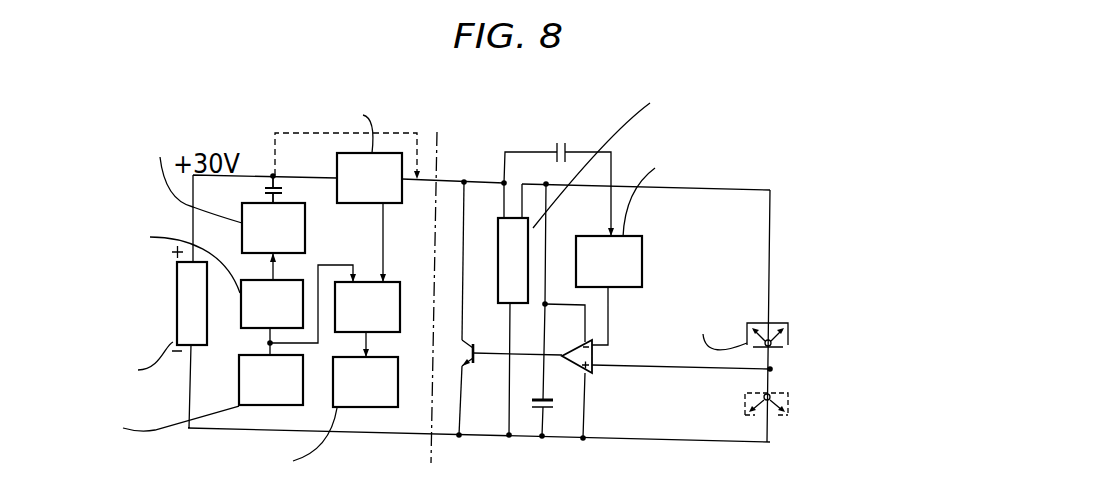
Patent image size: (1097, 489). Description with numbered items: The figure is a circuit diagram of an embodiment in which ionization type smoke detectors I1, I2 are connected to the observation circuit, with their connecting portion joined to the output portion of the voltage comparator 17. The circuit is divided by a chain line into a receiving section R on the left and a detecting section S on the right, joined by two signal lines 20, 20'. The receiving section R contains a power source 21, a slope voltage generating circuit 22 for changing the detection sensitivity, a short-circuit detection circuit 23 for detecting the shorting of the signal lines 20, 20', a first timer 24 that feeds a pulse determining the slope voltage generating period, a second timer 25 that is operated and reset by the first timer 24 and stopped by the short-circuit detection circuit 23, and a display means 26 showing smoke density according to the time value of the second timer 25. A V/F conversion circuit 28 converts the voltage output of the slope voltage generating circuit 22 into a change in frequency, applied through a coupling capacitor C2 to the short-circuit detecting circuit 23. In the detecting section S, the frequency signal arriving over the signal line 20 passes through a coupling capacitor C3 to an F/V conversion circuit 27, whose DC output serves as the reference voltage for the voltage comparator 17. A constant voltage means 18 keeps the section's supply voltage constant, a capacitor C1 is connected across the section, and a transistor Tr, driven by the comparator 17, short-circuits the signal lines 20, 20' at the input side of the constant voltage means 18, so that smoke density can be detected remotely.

The voltage comparator 17 is at (580, 343).
The constant voltage means 18 is at (498, 235).
The signal line 20 is at (470, 241).
The signal line 20' is at (463, 423).
The power source 21 is at (170, 281).
The slope voltage generating circuit 22 is at (241, 292).
The short-circuit detection circuit 23 is at (337, 160).
The first timer 24 is at (239, 394).
The second timer 25 is at (390, 282).
The display means 26 is at (348, 408).
The F/V conversion circuit 27 is at (655, 226).
The V/F conversion circuit 28 is at (255, 203).
The transistor Tr is at (485, 332).
The capacitor C1 is at (547, 408).
The coupling capacitor C2 is at (271, 174).
The coupling capacitor C3 is at (570, 143).
The receiving section R is at (407, 126).
The detecting section S is at (478, 127).
The smoke detector I1 is at (704, 320).
The smoke detector I2 is at (755, 400).